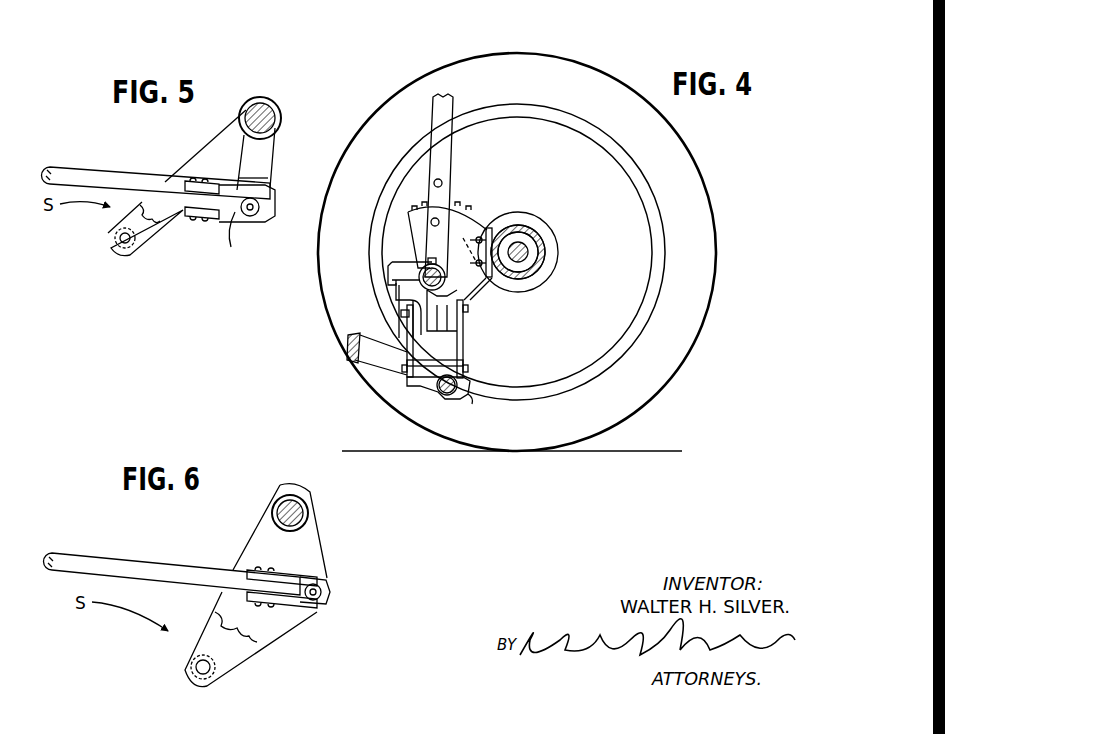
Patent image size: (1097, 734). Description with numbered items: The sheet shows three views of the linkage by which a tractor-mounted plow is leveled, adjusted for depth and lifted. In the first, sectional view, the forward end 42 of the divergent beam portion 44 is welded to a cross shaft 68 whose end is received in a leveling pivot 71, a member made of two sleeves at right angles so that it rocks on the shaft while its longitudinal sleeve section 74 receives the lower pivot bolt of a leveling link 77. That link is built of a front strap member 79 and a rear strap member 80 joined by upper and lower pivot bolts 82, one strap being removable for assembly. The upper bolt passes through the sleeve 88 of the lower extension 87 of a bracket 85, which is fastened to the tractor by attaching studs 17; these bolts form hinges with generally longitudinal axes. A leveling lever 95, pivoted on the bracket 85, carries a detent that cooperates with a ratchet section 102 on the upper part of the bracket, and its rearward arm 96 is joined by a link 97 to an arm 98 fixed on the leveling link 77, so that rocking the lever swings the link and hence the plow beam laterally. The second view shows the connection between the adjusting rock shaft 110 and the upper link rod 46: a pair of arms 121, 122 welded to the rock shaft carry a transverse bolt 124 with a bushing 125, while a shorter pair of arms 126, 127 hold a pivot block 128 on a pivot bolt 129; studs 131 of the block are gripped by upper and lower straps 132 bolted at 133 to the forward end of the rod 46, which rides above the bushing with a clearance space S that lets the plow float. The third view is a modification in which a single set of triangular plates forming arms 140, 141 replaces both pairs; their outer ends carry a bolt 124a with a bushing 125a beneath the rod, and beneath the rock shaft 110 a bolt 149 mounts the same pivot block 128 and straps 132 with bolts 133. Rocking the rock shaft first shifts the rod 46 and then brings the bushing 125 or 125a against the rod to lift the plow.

In FIG. 4, the attaching studs 17 is at (473, 256).
In FIG. 4, the forward end of divergent portion 42 is at (436, 390).
In FIG. 4, the divergent portion 44 is at (361, 340).
In FIG. 5, the rod 46 is at (103, 183).
In FIG. 6, the rod 46 is at (113, 567).
In FIG. 4, the cross shaft 68 is at (458, 392).
In FIG. 4, the leveling pivot 71 is at (445, 358).
In FIG. 4, the sleeve section 74 is at (423, 374).
In FIG. 4, the leveling link 77 is at (470, 324).
In FIG. 4, the front strap member 79 is at (465, 337).
In FIG. 4, the rear strap member 80 is at (407, 356).
In FIG. 4, the pivot bolts 82 is at (466, 309).
In FIG. 4, the bracket 85 is at (403, 233).
In FIG. 4, the lower extension 87 is at (447, 324).
In FIG. 4, the sleeve 88 is at (397, 298).
In FIG. 4, the leveling lever 95 is at (443, 156).
In FIG. 4, the arm 96 is at (400, 273).
In FIG. 4, the link 97 is at (392, 297).
In FIG. 4, the arm 98 is at (403, 322).
In FIG. 4, the ratchet section 102 is at (415, 220).
In FIG. 5, the rock shaft 110 is at (276, 108).
In FIG. 6, the rock shaft 110 is at (309, 507).
In FIG. 5, the arm 121 is at (207, 158).
In FIG. 5, the arm 122 is at (147, 226).
In FIG. 5, the transverse bolt 124 is at (121, 243).
In FIG. 5, the bushing 125 is at (116, 233).
In FIG. 5, the arm 126 is at (258, 180).
In FIG. 5, the arm 127 is at (258, 165).
In FIG. 5, the pivot block 128 is at (219, 222).
In FIG. 6, the pivot block 128 is at (331, 588).
In FIG. 5, the pivot bolt 129 is at (232, 240).
In FIG. 5, the studs 131 is at (262, 194).
In FIG. 5, the straps 132 is at (223, 182).
In FIG. 6, the straps 132 is at (293, 573).
In FIG. 5, the bolts 133 is at (194, 180).
In FIG. 6, the arm 140 is at (220, 630).
In FIG. 6, the arm 141 is at (257, 552).
In FIG. 6, the bolt 149 is at (324, 597).
In FIG. 6, the bolt 124a is at (190, 667).
In FIG. 6, the bushing 125a is at (216, 670).